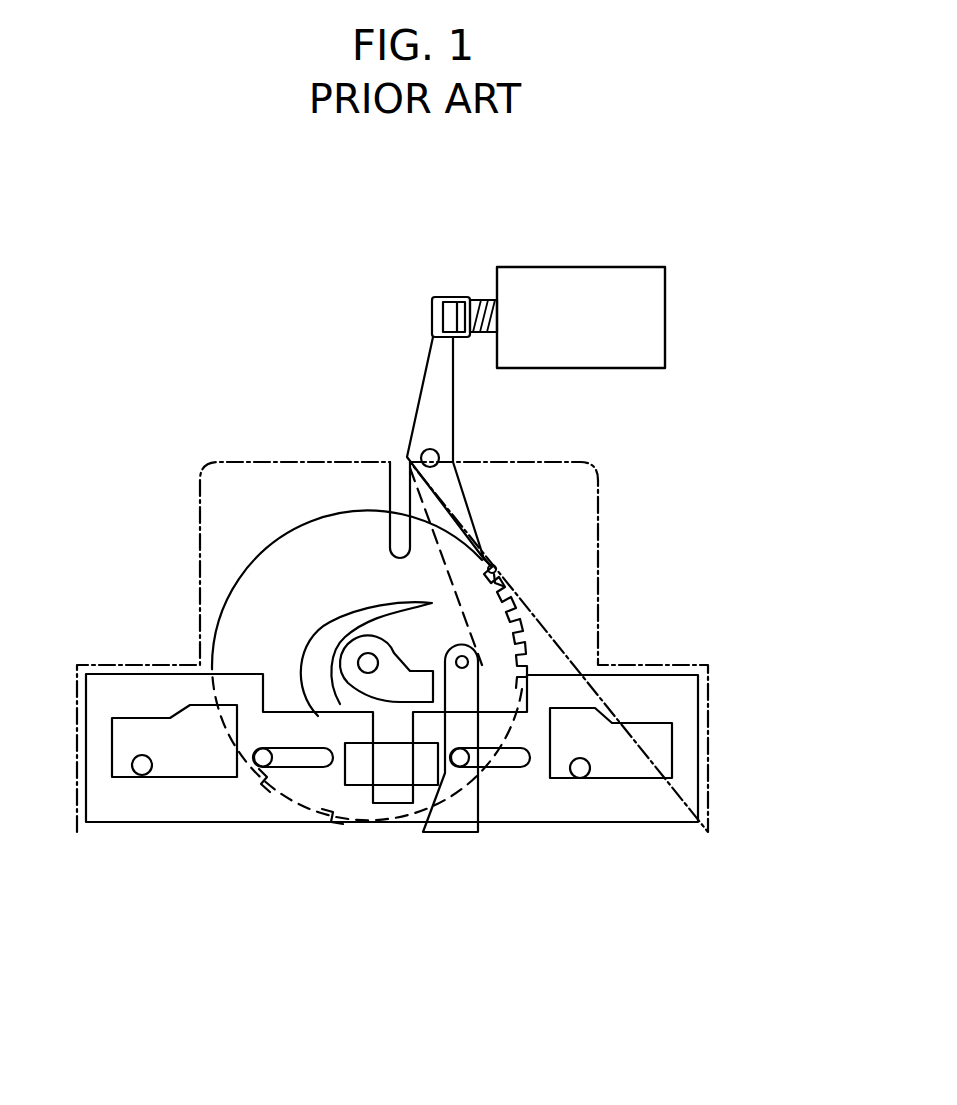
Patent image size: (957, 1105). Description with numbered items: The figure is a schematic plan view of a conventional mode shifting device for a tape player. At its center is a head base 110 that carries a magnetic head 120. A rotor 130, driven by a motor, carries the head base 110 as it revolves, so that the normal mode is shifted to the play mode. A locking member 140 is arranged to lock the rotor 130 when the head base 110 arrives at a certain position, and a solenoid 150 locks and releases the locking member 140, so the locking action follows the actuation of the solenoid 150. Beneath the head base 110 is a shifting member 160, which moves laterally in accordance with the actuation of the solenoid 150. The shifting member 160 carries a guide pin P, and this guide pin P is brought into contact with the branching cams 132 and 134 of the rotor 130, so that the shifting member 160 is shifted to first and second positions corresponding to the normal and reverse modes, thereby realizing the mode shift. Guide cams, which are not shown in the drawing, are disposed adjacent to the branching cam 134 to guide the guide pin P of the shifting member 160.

The head base 110 is at (683, 664).
The magnetic head 120 is at (362, 782).
The rotor 130 is at (268, 548).
The branching cam 132 is at (497, 583).
The branching cam 134 is at (305, 650).
The locking member 140 is at (443, 410).
The solenoid 150 is at (653, 322).
The shifting member 160 is at (685, 790).
The guide pin P is at (478, 640).